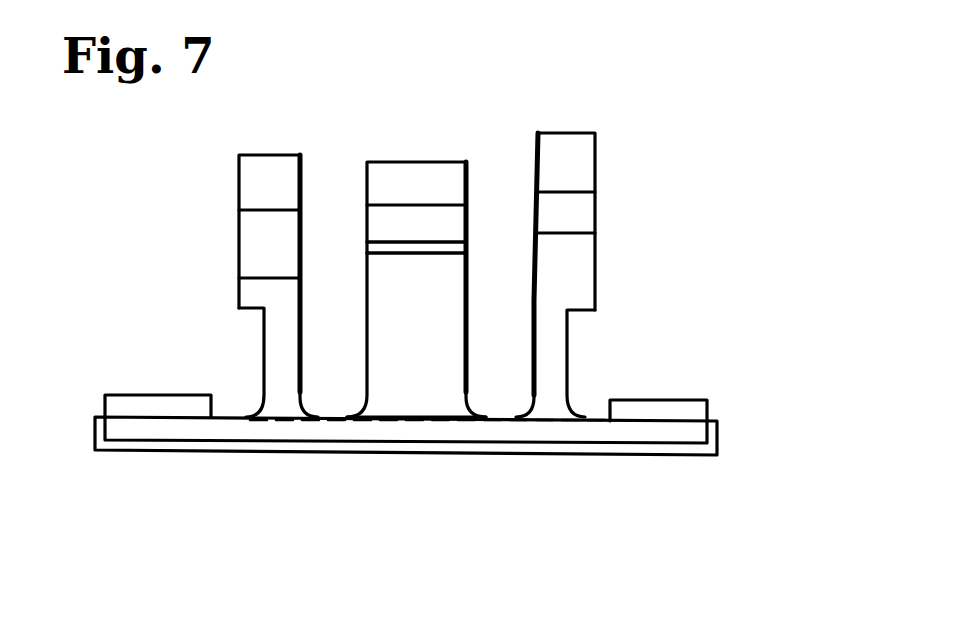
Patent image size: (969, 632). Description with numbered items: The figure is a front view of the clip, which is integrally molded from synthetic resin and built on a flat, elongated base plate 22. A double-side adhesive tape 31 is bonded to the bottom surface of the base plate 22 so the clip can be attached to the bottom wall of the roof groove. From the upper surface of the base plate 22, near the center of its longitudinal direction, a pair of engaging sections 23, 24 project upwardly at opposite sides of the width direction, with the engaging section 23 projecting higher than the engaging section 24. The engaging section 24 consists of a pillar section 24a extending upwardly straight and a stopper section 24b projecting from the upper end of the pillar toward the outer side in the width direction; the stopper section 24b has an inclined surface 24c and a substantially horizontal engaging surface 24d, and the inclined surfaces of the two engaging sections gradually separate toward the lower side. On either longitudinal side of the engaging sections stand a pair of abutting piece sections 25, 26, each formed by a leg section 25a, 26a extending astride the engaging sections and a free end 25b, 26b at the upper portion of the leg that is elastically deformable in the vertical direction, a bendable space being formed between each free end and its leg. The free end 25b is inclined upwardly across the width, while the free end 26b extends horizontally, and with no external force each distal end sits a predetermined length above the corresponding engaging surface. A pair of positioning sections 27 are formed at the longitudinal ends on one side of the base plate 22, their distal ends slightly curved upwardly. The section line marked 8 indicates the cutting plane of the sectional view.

The section line 8- 8 is at (418, 110).
The base plate 22 is at (677, 433).
The engaging section 23 is at (397, 167).
The engaging section 24 is at (407, 357).
The pillar section 24a is at (415, 367).
The stopper section 24b is at (402, 243).
The inclined surface 24c is at (380, 225).
The engaging surface 24d is at (428, 254).
The abutting piece section 25 is at (644, 209).
The leg section 25a is at (553, 363).
The free end 25b is at (570, 150).
The abutting piece section 26 is at (195, 275).
The leg section 26a is at (280, 350).
The free end 26b is at (258, 180).
The positioning section 27 is at (160, 402).
The double-side adhesive tape 31 is at (633, 454).